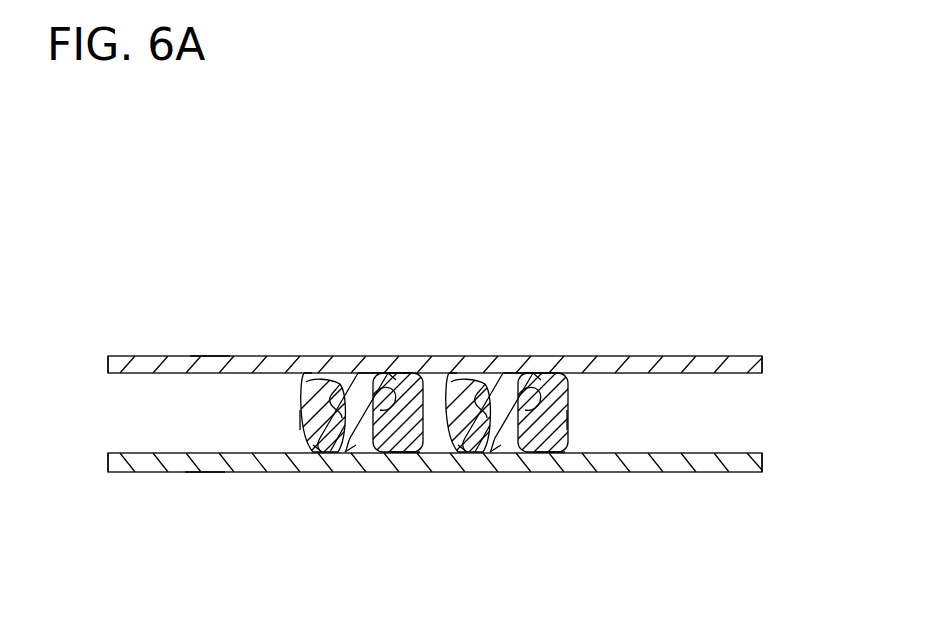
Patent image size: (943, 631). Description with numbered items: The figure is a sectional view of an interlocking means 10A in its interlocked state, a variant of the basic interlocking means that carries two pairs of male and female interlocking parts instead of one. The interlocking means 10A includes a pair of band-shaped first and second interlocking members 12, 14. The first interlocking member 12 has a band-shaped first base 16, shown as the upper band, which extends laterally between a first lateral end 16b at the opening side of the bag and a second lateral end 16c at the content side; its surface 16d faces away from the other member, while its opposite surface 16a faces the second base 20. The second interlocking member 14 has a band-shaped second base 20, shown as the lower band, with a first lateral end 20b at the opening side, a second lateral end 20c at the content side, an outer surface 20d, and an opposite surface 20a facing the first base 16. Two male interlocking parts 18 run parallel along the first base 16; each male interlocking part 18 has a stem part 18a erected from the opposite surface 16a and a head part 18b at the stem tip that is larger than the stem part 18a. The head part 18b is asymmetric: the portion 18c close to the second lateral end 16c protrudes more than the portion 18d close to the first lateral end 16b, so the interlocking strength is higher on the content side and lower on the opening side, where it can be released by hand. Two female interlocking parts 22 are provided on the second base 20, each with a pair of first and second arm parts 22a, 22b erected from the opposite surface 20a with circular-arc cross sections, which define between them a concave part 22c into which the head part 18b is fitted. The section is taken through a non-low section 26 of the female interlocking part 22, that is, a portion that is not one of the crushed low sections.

The interlocking means 10A is at (546, 204).
The first interlocking member 12 is at (708, 357).
The second interlocking member 14 is at (702, 472).
The first base 16 is at (137, 357).
The opposite surface 16a is at (171, 371).
The first lateral end 16b is at (107, 364).
The second lateral end 16c is at (764, 364).
The first plate outer surface 16d is at (208, 357).
The male interlocking part 18 is at (345, 473).
The stem part 18a is at (356, 357).
The head part 18b is at (380, 473).
The portion close to the second lateral end 18c is at (422, 357).
The portion close to the first lateral end 18d is at (313, 473).
The second base 20 is at (137, 473).
The opposite surface 20a is at (162, 453).
The first lateral end 20b is at (107, 463).
The second lateral end 20c is at (764, 463).
The second plate outer surface 20d is at (200, 473).
The female interlocking part 22 is at (300, 397).
The first arm part 22a is at (306, 357).
The second arm part 22b is at (400, 357).
The concave part 22c is at (407, 473).
The non-low section 26 is at (297, 423).